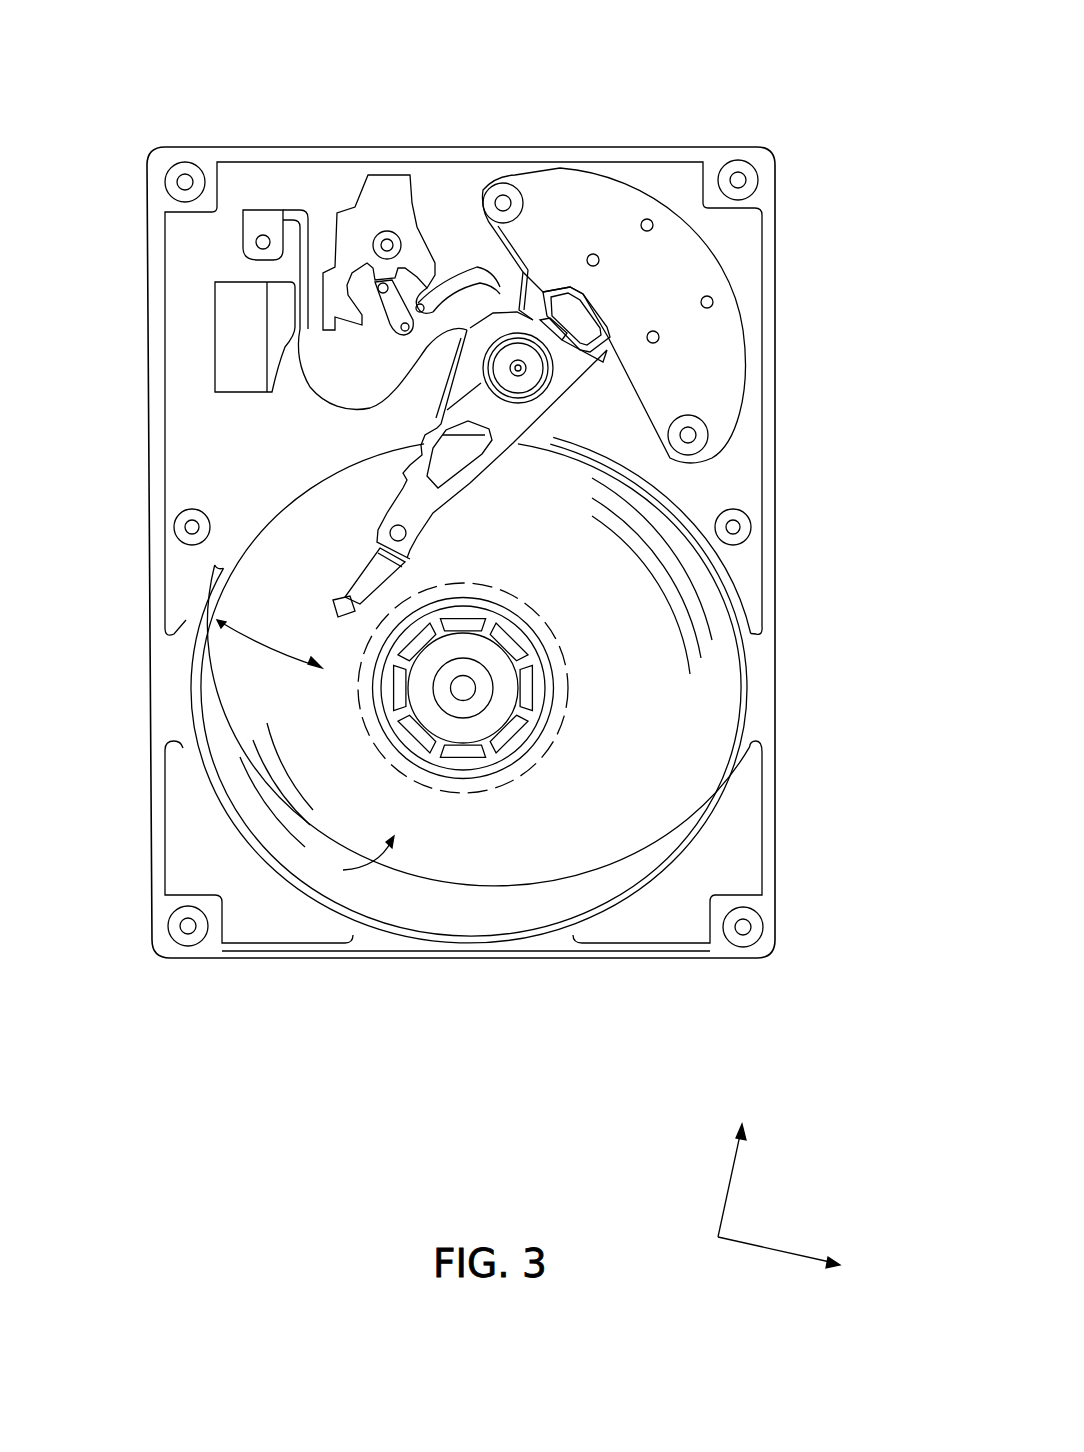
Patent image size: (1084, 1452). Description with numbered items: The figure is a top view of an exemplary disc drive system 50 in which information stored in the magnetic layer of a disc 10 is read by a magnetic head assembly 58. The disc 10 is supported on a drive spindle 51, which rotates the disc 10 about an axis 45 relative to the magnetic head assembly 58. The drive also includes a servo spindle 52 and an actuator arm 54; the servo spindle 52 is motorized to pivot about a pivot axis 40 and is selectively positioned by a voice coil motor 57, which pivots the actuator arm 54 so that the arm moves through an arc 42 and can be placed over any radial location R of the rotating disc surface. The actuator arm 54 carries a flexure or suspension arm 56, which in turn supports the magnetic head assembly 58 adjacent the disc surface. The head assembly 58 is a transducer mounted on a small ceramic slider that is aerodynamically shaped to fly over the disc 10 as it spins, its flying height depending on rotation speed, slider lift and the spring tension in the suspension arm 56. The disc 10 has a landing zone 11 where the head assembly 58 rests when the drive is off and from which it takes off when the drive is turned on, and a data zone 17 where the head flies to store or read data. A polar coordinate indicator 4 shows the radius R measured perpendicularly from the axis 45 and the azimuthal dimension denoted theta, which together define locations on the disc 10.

The coordinate system 4 is at (722, 1183).
The disc 10 is at (700, 732).
The landing zone 11 is at (397, 757).
The data zone 17 is at (354, 857).
The pivot axis 40 is at (530, 367).
The arc 42 is at (270, 650).
The axis 45 is at (463, 688).
The disc drive system 50 is at (318, 74).
The drive spindle 51 is at (463, 705).
The servo spindle 52 is at (437, 420).
The actuator arm 54 is at (493, 423).
The suspension arm 56 is at (370, 567).
The voice coil motor 57 is at (563, 197).
The magnetic head assembly 58 is at (340, 603).